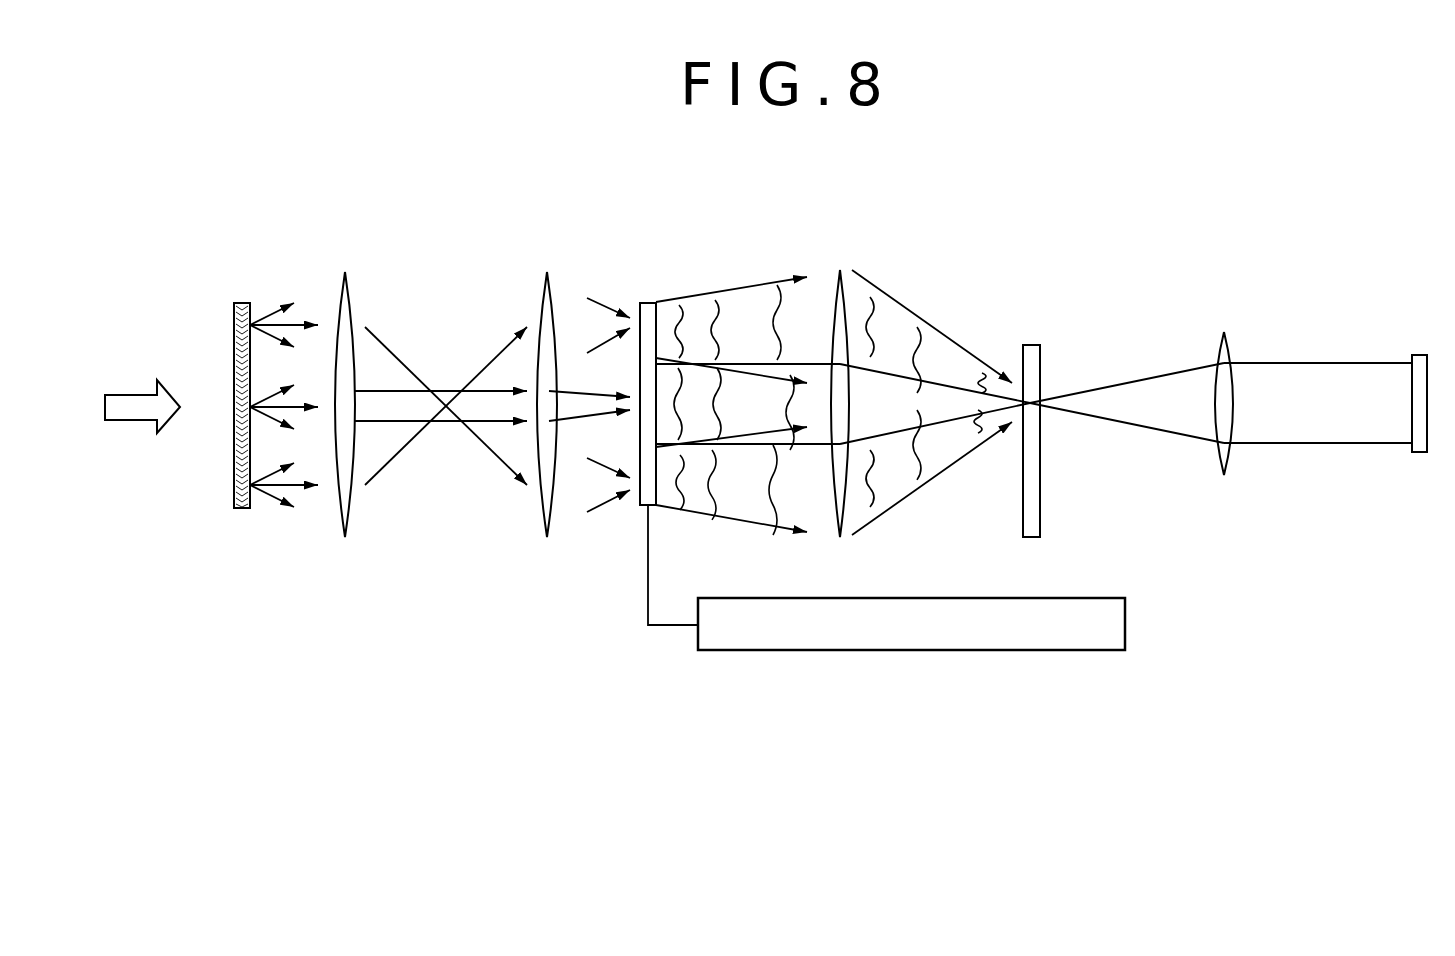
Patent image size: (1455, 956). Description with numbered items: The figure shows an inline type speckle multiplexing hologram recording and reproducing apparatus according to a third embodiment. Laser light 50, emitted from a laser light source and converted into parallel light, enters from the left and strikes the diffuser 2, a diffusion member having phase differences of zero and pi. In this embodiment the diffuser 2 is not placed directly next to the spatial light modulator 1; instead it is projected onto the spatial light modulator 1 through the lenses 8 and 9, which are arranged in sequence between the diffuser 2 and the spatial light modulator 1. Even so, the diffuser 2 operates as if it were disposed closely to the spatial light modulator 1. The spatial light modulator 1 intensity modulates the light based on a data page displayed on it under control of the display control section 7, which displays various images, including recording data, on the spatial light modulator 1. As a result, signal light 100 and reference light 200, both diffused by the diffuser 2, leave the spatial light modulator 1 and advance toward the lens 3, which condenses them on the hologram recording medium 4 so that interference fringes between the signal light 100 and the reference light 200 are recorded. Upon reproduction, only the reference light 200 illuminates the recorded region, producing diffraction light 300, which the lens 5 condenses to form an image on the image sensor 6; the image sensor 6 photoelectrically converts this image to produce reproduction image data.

The spatial light modulator 1 is at (648, 303).
The diffuser 2 is at (242, 303).
The lens 3 is at (840, 270).
The hologram recording medium 4 is at (1032, 345).
The lens 5 is at (1224, 332).
The image sensor 6 is at (1420, 355).
The display control section 7 is at (1127, 625).
The lens 8 is at (345, 272).
The lens 9 is at (547, 272).
The laser light 50 is at (123, 395).
The signal light 100 is at (745, 373).
The reference light 200 is at (738, 282).
The diffraction light 300 is at (1141, 378).